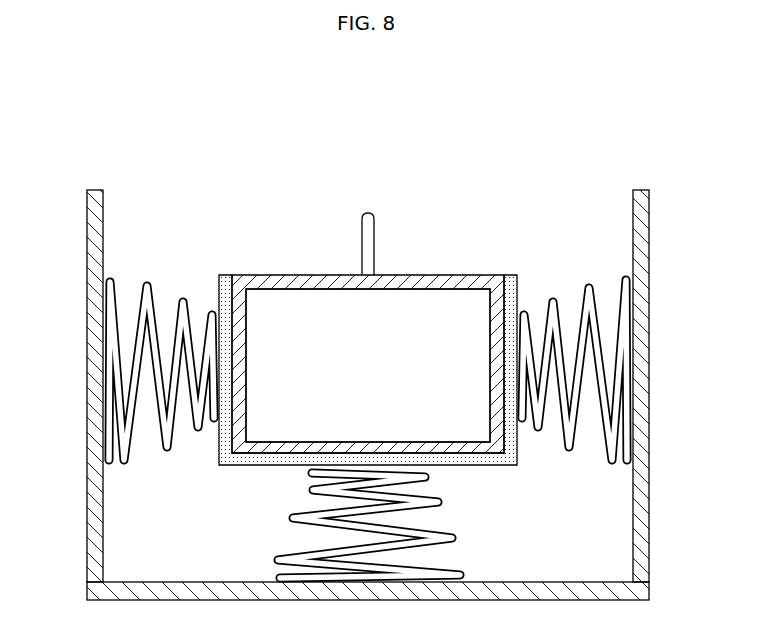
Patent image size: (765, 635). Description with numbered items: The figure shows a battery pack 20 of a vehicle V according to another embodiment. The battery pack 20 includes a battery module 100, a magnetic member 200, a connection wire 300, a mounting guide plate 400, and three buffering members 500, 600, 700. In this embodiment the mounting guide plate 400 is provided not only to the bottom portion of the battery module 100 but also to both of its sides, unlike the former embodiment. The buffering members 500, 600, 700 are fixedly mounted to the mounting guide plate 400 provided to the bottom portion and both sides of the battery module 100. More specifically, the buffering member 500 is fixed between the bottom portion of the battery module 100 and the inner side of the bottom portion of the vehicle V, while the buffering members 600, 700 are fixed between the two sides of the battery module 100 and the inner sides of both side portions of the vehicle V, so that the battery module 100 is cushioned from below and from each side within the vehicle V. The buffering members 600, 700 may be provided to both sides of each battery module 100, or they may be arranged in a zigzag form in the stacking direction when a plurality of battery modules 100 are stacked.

The battery pack 20 is at (290, 250).
The battery module 100 is at (421, 298).
The magnetic member 200 is at (475, 286).
The connection wire 300 is at (366, 212).
The mounting guide plate 400 is at (244, 464).
The buffering member 500 is at (294, 558).
The buffering member 600 is at (131, 447).
The buffering member 700 is at (610, 448).
The vehicle V is at (188, 114).